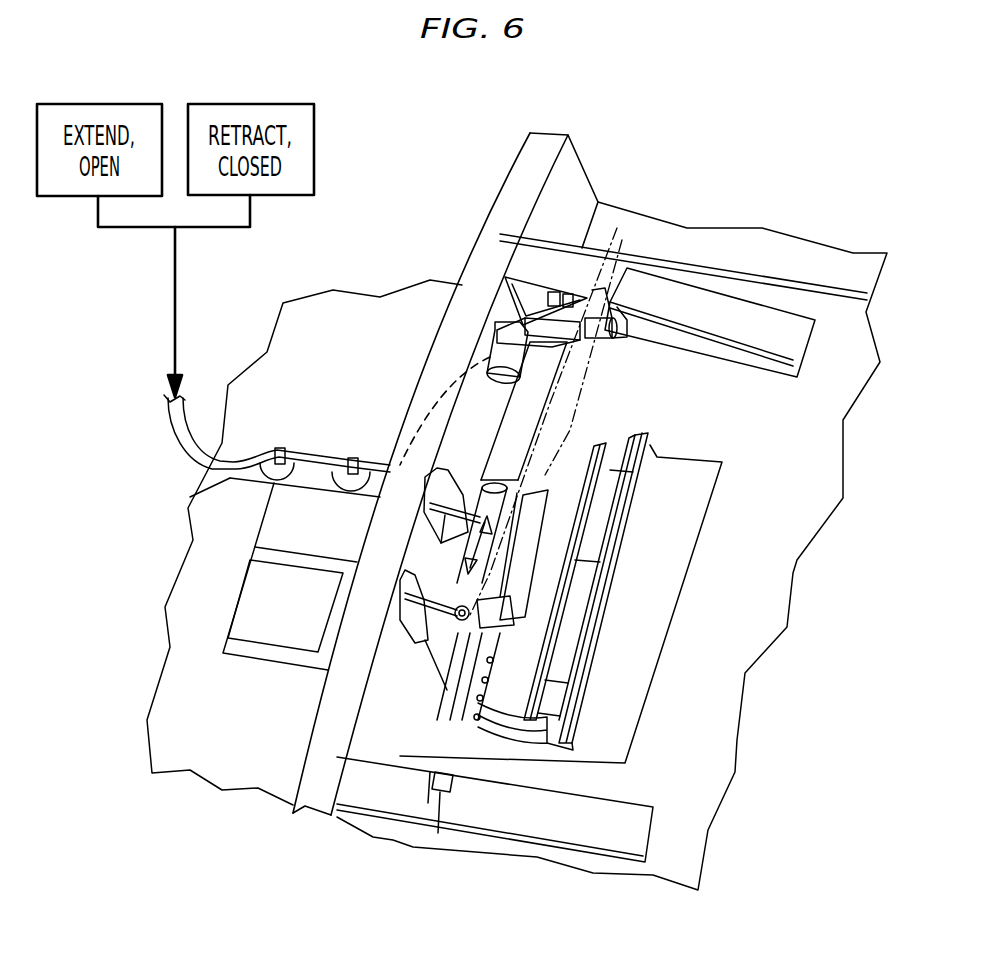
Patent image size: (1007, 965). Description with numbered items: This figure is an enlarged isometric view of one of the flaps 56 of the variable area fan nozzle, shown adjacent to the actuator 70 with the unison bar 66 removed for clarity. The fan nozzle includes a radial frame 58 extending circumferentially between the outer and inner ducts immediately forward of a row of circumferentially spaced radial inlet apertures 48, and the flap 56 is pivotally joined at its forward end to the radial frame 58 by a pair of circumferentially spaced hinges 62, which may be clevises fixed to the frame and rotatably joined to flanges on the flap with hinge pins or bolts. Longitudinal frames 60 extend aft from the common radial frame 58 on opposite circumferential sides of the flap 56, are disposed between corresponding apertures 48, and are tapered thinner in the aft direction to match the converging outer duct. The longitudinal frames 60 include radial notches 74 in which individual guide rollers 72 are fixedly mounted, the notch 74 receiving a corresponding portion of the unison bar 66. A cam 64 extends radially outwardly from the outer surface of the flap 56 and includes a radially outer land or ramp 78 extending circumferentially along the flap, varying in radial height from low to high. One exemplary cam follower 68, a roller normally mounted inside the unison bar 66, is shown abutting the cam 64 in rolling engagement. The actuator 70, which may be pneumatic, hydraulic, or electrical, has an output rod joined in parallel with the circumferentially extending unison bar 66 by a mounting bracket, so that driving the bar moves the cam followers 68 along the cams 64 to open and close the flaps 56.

The inlet apertures 48 is at (613, 570).
The flaps 56 is at (613, 437).
The radial frame 58 is at (573, 160).
The longitudinal frames 60 is at (740, 315).
The hinges 62 is at (413, 613).
The cam 64 is at (505, 518).
The unison bar 66 is at (603, 380).
The cam followers 68 is at (447, 613).
The actuator 70 is at (513, 433).
The guide rollers 72 is at (600, 307).
The radial notches 74 is at (617, 262).
The ramp 78 is at (503, 563).